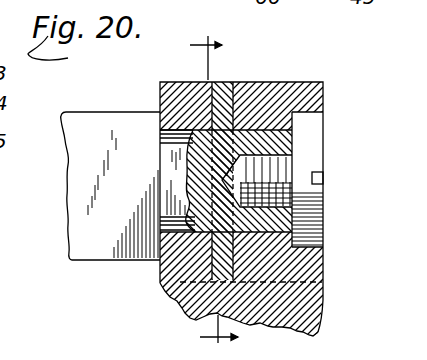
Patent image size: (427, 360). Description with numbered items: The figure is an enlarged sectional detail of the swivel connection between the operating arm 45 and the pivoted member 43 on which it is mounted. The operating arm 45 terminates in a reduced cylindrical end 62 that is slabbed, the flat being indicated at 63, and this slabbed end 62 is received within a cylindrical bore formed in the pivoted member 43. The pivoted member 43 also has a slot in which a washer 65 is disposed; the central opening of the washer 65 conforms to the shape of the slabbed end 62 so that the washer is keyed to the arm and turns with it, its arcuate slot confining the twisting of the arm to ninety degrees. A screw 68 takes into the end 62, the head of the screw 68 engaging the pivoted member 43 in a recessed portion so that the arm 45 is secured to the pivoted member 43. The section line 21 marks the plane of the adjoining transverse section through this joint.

The section line 21 is at (214, 187).
The pivoted member 43 is at (303, 82).
The operating arm 45 is at (75, 213).
The reduced cylindrical end 62 is at (293, 149).
The slab 63 is at (172, 189).
The washer 65 is at (222, 81).
The screw 68 is at (312, 133).